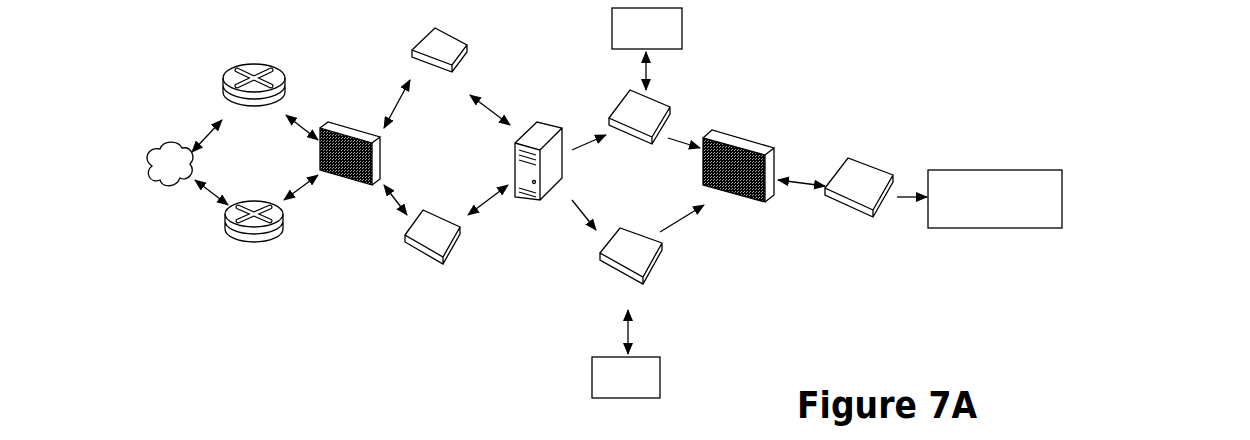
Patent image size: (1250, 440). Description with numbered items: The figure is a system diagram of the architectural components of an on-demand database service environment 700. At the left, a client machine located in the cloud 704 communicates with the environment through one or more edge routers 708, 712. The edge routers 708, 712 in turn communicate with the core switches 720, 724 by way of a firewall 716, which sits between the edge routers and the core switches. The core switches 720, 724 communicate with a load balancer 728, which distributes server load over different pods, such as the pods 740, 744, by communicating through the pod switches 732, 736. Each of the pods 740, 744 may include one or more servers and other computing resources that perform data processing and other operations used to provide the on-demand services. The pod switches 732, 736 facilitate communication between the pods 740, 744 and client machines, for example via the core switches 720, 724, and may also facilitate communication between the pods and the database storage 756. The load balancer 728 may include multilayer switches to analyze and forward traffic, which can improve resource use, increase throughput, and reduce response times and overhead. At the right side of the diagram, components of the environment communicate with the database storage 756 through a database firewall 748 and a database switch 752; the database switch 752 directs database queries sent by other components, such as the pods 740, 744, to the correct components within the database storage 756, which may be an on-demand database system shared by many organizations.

The on-demand database service environment 700 is at (868, 316).
The cloud 704 is at (149, 147).
The edge router 708 is at (262, 63).
The edge router 712 is at (229, 240).
The firewall 716 is at (320, 127).
The core switch 720 is at (433, 30).
The core switch 724 is at (452, 250).
The load balancer 728 is at (523, 135).
The pod switch 732 is at (658, 100).
The pod switch 736 is at (655, 272).
The pod 740 is at (683, 27).
The pod 744 is at (660, 372).
The database firewall 748 is at (740, 138).
The database switch 752 is at (857, 158).
The database storage 756 is at (948, 170).